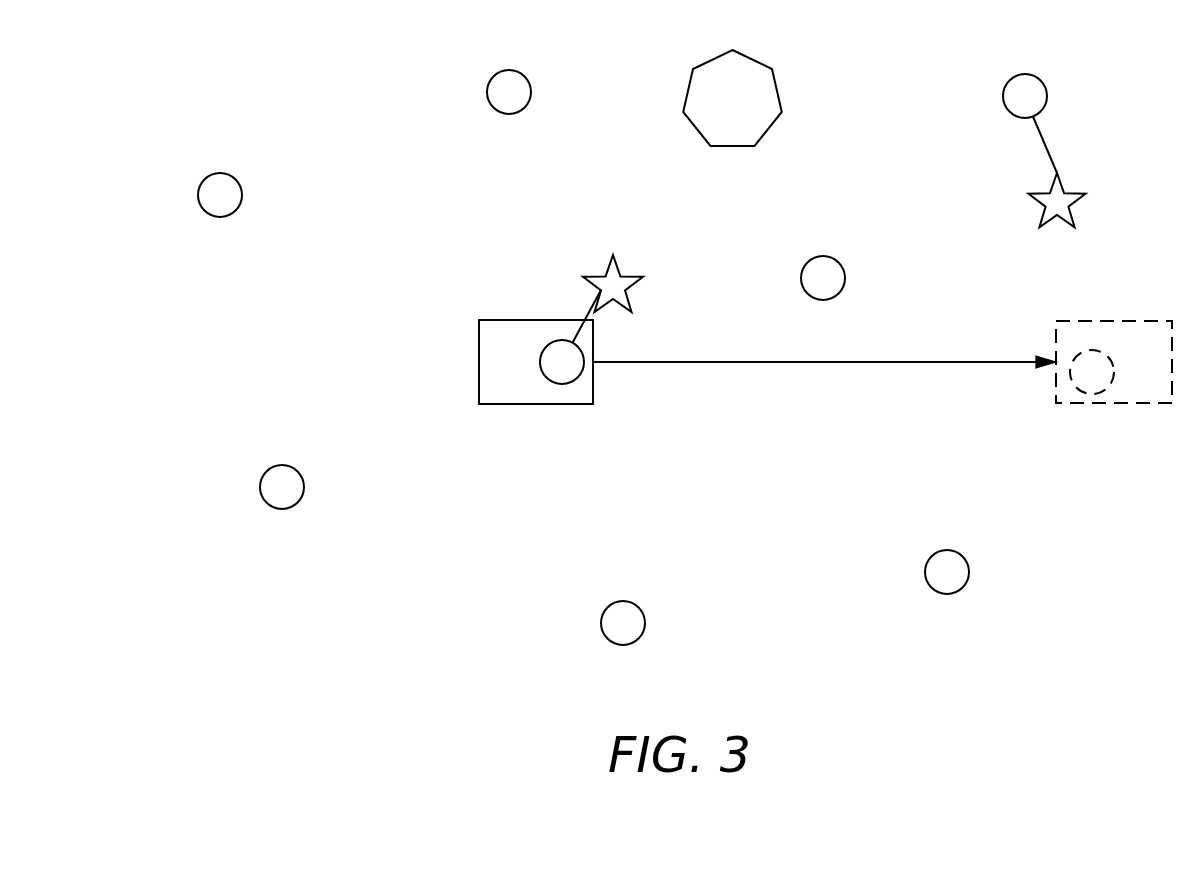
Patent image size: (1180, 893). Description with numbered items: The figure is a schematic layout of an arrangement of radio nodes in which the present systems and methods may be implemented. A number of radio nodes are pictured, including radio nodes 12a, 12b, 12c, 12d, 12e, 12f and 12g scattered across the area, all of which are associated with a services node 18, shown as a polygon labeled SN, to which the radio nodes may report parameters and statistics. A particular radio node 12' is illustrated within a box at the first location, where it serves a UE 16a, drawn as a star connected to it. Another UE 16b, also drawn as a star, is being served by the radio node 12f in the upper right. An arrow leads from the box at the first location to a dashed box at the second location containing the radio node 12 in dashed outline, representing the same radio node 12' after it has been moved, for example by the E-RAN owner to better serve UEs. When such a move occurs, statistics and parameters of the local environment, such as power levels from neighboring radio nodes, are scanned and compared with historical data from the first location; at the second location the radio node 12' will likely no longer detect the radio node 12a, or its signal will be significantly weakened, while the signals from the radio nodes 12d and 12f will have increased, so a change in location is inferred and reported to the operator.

The radio node 12 is at (1116, 368).
The radio node 12' is at (531, 368).
The radio node 12a is at (220, 173).
The radio node 12b is at (282, 465).
The radio node 12c is at (623, 601).
The radio node 12d is at (947, 550).
The radio node 12e is at (509, 70).
The radio node 12f is at (1025, 74).
The radio node 12g is at (823, 256).
The UE 16a is at (630, 282).
The UE 16b is at (1075, 192).
The services node 18 is at (732, 50).